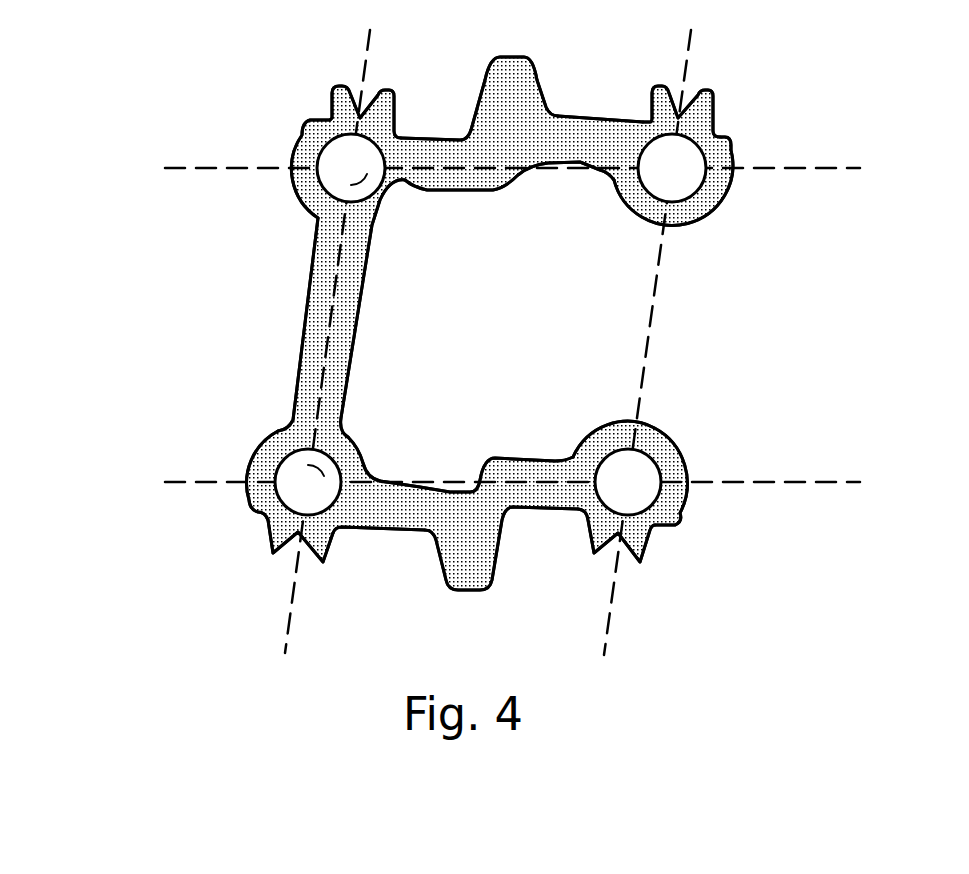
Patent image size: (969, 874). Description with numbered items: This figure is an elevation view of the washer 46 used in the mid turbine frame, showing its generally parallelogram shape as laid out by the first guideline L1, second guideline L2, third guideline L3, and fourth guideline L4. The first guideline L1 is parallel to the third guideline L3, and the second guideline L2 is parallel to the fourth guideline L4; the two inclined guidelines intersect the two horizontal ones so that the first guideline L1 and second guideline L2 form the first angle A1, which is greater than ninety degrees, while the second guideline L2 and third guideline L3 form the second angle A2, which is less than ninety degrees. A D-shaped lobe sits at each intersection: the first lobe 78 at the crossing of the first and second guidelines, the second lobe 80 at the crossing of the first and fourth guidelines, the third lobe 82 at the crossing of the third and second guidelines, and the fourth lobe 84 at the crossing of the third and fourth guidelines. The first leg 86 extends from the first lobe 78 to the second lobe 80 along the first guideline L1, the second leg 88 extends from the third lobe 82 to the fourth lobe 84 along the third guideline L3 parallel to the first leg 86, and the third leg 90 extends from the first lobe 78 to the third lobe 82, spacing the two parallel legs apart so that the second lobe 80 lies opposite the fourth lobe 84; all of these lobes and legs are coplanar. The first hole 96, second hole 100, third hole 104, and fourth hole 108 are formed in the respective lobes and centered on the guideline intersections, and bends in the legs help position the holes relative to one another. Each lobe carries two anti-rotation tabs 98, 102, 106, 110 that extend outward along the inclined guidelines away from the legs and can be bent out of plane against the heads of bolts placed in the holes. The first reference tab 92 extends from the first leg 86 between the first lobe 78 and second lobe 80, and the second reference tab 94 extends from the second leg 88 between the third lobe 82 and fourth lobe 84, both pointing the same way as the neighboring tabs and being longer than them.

The washer 46 is at (150, 75).
The first lobe 78 is at (314, 138).
The second lobe 80 is at (723, 147).
The third lobe 82 is at (250, 510).
The fourth lobe 84 is at (673, 516).
The first leg 86 is at (574, 126).
The second leg 88 is at (391, 532).
The third leg 90 is at (318, 305).
The first reference tab 92 is at (516, 68).
The second reference tab 94 is at (468, 580).
The first hole 96 is at (333, 181).
The anti-rotation tabs 98 is at (342, 86).
The second hole 100 is at (687, 182).
The anti-rotation tabs 102 is at (662, 90).
The third hole 104 is at (295, 462).
The anti-rotation tabs 106 is at (273, 556).
The fourth hole 108 is at (643, 472).
The anti-rotation tabs 110 is at (594, 550).
The first angle A1 is at (367, 174).
The second angle A2 is at (326, 474).
The first guideline L1 is at (240, 166).
The second guideline L2 is at (372, 40).
The third guideline L3 is at (205, 482).
The fourth guideline L4 is at (613, 597).